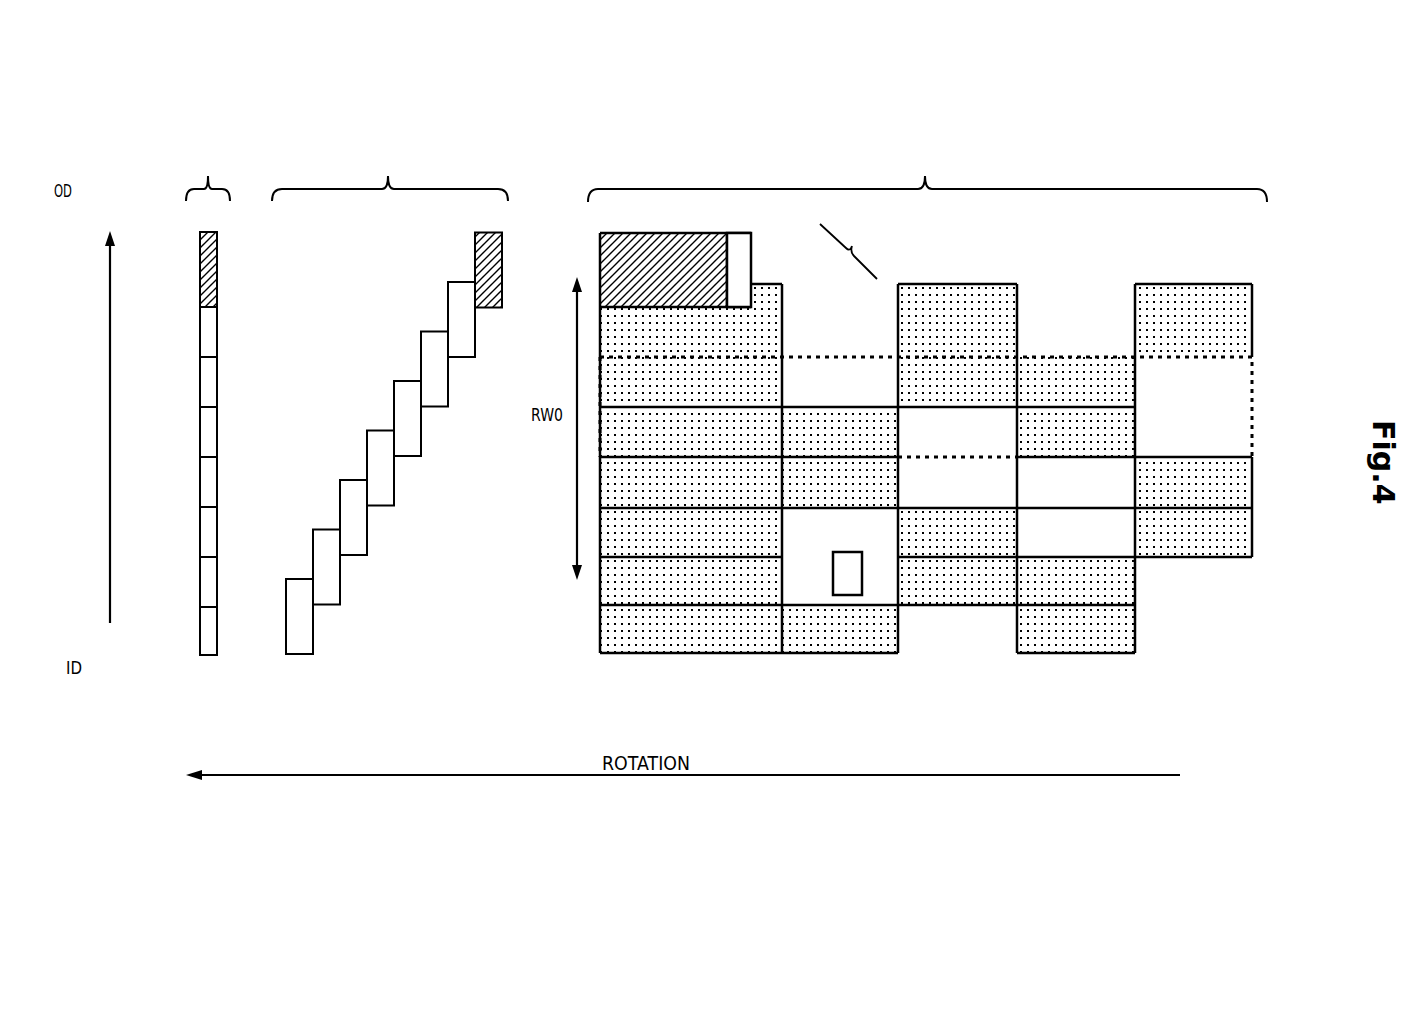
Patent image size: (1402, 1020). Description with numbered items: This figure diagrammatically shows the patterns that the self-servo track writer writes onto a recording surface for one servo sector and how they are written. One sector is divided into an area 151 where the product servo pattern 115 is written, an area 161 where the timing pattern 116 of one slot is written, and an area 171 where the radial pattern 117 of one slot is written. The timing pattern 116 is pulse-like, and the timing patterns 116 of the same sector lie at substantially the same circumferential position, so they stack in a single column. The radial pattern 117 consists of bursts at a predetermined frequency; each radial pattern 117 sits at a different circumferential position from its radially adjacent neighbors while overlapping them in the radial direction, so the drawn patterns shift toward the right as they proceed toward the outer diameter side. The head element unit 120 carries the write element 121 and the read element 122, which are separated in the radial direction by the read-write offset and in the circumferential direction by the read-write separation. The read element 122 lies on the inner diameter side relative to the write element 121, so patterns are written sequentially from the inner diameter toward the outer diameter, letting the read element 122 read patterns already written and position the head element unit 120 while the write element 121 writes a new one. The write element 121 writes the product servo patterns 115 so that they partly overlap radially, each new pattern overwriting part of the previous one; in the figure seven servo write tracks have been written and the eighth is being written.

The product servo pattern 115 is at (1255, 405).
The timing pattern 116 is at (207, 656).
The radial pattern 117 is at (300, 655).
The head element unit 120 is at (858, 248).
The write element 121 is at (753, 268).
The read element 122 is at (857, 552).
The area where the product servo pattern is written 151 is at (927, 398).
The area where the timing pattern is written 161 is at (208, 173).
The area where the radial pattern is written 171 is at (390, 170).